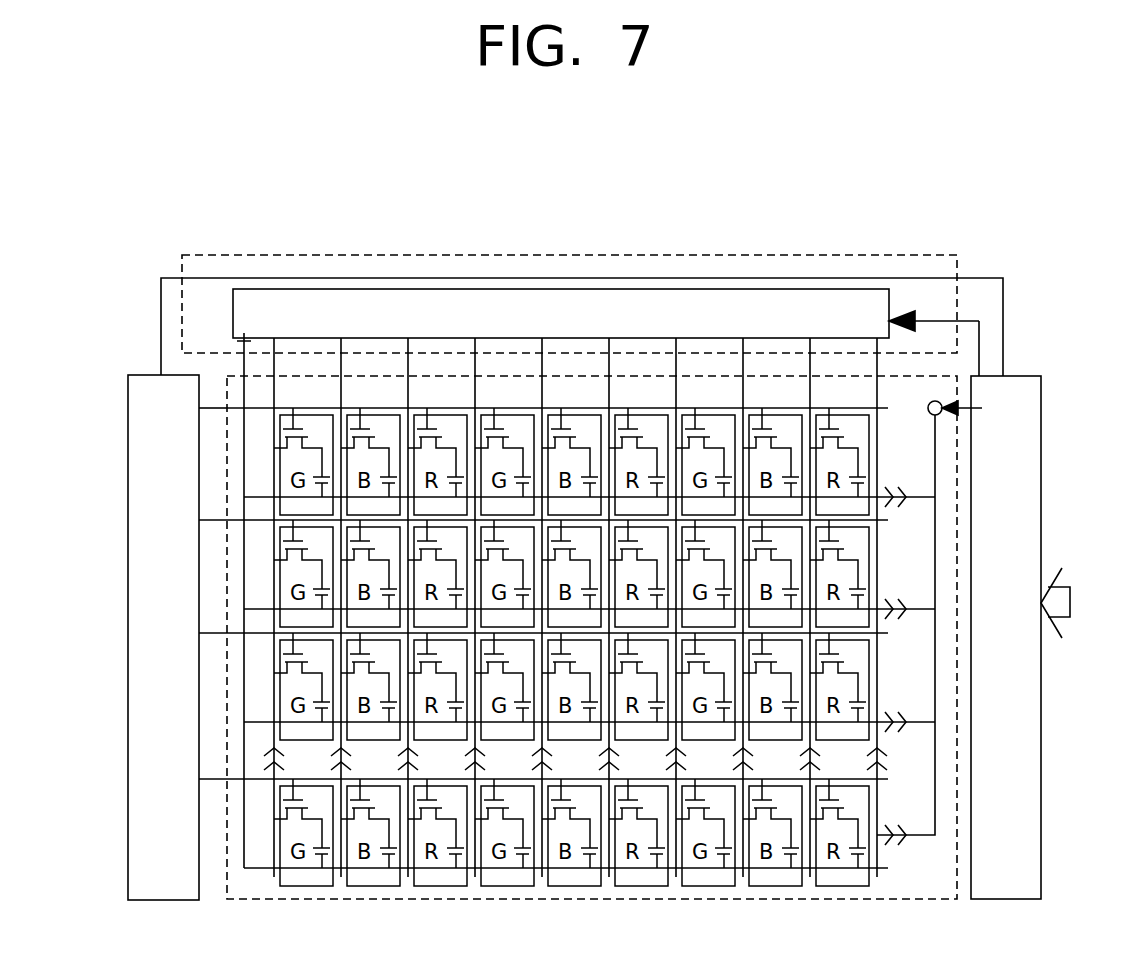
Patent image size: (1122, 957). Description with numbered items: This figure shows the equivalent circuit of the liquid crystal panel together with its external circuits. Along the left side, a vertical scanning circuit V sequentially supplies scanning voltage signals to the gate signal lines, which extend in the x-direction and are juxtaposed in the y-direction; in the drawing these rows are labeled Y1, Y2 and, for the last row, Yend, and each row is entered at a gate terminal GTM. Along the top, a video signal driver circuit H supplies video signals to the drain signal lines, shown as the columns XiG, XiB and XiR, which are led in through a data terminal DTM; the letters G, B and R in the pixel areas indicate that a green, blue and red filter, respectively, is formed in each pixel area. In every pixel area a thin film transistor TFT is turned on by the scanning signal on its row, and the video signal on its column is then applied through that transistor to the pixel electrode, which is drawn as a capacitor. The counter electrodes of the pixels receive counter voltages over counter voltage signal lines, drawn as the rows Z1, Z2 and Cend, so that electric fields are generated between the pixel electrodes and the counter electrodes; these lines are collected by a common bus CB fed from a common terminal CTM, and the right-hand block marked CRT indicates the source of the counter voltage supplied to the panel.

The video signal driver circuit H is at (278, 305).
The vertical scanning circuit V is at (143, 783).
The data terminal DTM is at (747, 352).
The gate terminal GTM is at (212, 407).
The common terminal CTM is at (240, 342).
The common bus line CB is at (935, 484).
The common potential CRT is at (1005, 660).
The thin film transistor TFT is at (1006, 637).
The first gate line Y1 is at (557, 394).
The first common line Z1 is at (556, 479).
The second gate line Y2 is at (543, 536).
The second common line Z2 is at (554, 594).
The last gate line Yend is at (543, 796).
The last common line Cend is at (548, 852).
The green data line XiG is at (290, 607).
The blue data line XiB is at (356, 607).
The red data line XiR is at (423, 607).